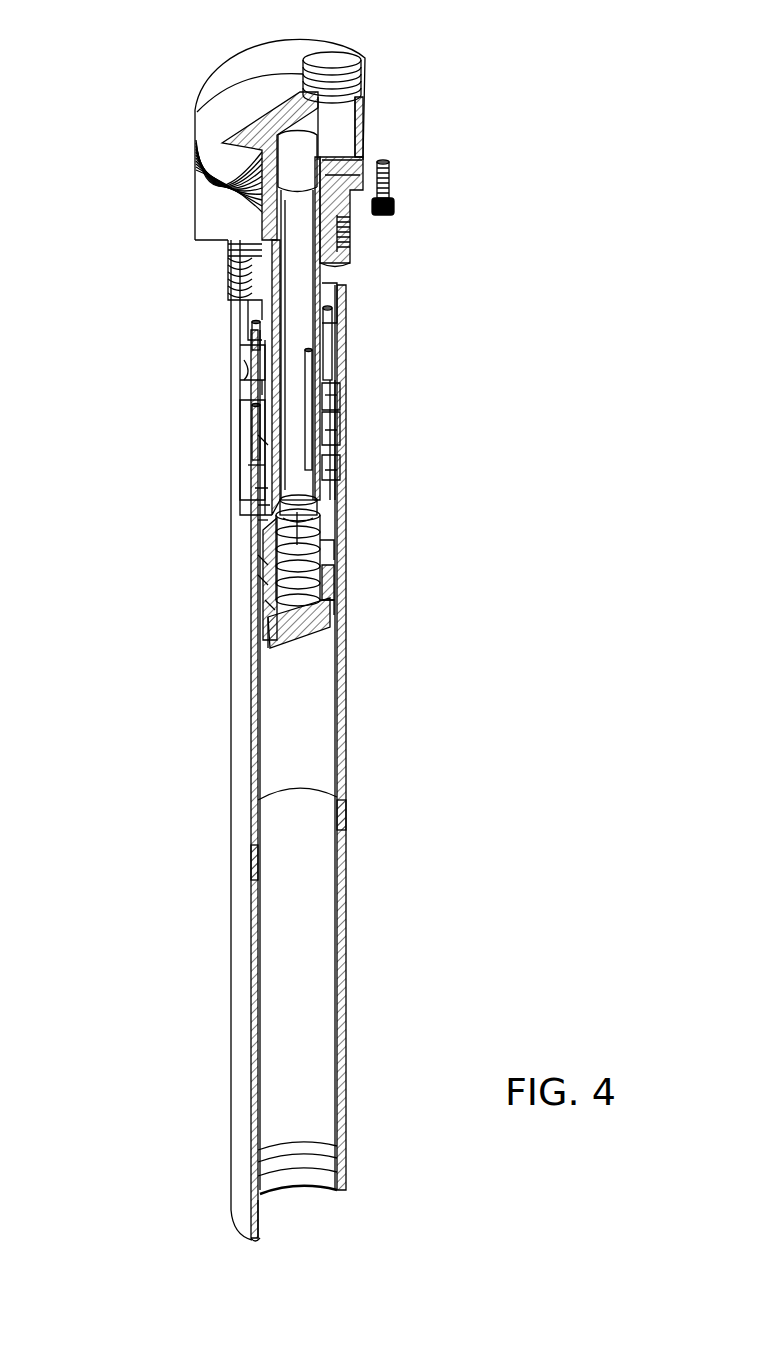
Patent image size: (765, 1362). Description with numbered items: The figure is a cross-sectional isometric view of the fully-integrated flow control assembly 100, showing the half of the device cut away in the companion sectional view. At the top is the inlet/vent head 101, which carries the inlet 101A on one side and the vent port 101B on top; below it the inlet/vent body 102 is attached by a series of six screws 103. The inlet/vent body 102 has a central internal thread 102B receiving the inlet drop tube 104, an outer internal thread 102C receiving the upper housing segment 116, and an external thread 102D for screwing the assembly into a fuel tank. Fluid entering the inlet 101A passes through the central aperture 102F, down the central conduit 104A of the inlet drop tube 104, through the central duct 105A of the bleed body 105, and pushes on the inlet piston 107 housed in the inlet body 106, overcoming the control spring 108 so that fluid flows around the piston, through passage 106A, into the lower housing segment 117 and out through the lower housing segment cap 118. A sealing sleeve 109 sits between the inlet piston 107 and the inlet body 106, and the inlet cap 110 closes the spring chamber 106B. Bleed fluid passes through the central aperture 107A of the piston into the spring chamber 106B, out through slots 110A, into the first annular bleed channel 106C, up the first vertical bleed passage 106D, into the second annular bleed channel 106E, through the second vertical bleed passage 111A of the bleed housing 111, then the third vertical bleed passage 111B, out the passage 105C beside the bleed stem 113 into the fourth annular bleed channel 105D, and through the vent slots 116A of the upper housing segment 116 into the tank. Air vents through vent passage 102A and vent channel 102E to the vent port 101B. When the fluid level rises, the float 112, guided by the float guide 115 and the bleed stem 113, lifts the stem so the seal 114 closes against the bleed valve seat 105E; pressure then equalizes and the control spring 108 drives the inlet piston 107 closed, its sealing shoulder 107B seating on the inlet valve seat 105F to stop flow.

The fully-integrated flow control assembly 100 is at (188, 48).
The inlet/vent head 101 is at (205, 135).
The inlet 101A is at (205, 178).
The vent port 101B is at (358, 55).
The inlet/vent body 102 is at (215, 237).
The vent passage 102A is at (235, 255).
The central internal thread 102B is at (226, 270).
The outer internal thread 102C is at (250, 302).
The external thread 102D is at (250, 284).
The vent channel 102E is at (343, 163).
The central aperture 102F is at (350, 232).
The screw 103 is at (395, 182).
The inlet drop tube 104 is at (322, 290).
The central conduit 104A is at (300, 273).
The bleed body 105 is at (268, 455).
The central duct 105A is at (264, 470).
The passage 105C is at (340, 392).
The fourth annular bleed channel 105D is at (262, 440).
The bleed valve seat 105E is at (335, 402).
The inlet valve seat 105F is at (265, 522).
The inlet body 106 is at (265, 540).
The passage 106A is at (265, 578).
The spring chamber 106B is at (265, 560).
The first annular bleed channel 106C is at (327, 593).
The first vertical bleed passage 106D is at (327, 549).
The second annular bleed channel 106E is at (265, 508).
The inlet piston 107 is at (318, 510).
The central aperture 107A is at (312, 522).
The sealing shoulder 107B is at (300, 508).
The control spring 108 is at (322, 575).
The sealing sleeve 109 is at (272, 600).
The inlet cap 110 is at (332, 632).
The slots 110A is at (268, 622).
The bleed housing 111 is at (342, 442).
The second vertical bleed passage 111A is at (335, 456).
The third vertical bleed passage 111B is at (264, 490).
The float 112 is at (262, 384).
The bleed stem 113 is at (328, 362).
The seal 114 is at (340, 413).
The float guide 115 is at (255, 328).
The upper housing segment 116 is at (255, 350).
The vent slots 116A is at (258, 370).
The lower housing segment 117 is at (245, 695).
The lower housing segment cap 118 is at (290, 1175).